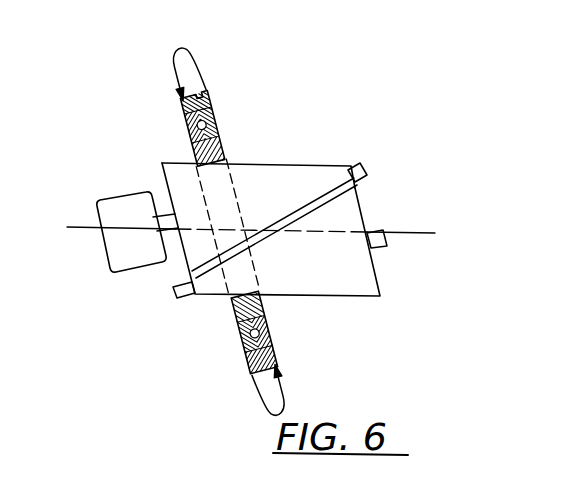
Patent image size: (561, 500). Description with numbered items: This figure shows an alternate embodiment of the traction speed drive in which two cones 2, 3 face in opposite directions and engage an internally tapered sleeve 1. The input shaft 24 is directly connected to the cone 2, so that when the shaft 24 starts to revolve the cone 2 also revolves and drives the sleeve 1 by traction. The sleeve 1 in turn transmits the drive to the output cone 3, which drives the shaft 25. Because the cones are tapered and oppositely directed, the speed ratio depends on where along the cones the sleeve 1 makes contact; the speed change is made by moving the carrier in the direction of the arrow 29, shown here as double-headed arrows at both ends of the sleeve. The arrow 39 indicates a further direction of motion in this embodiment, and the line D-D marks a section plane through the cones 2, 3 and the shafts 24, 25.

The internally tapered sleeve 1 is at (227, 147).
The cone 2 is at (308, 163).
The cone 3 is at (362, 297).
The input shaft 24 is at (113, 198).
The shaft 25 is at (383, 244).
The arrow 29 is at (166, 120).
The direction of movement arrow 39 is at (197, 32).
The section line D- D is at (75, 226).